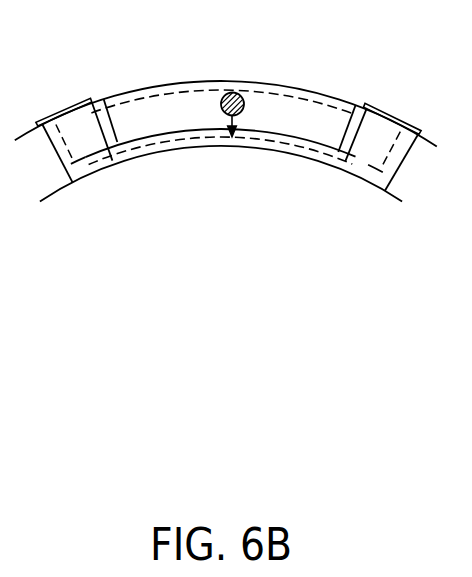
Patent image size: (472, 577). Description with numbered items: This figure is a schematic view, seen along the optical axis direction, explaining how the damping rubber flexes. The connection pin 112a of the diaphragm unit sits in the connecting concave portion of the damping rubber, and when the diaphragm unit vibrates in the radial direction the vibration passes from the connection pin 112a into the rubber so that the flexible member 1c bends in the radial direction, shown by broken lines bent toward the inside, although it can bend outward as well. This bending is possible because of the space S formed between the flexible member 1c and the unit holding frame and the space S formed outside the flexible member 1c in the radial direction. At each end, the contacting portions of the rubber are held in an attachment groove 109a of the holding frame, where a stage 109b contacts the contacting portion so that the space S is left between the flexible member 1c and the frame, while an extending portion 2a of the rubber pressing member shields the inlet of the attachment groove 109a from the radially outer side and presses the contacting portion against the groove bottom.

The flexible member 1c is at (298, 96).
The extending portion 2a is at (58, 112).
The attachment groove 109a is at (87, 163).
The stage 109b is at (103, 163).
The connection pin 112a is at (224, 97).
The space S is at (277, 150).